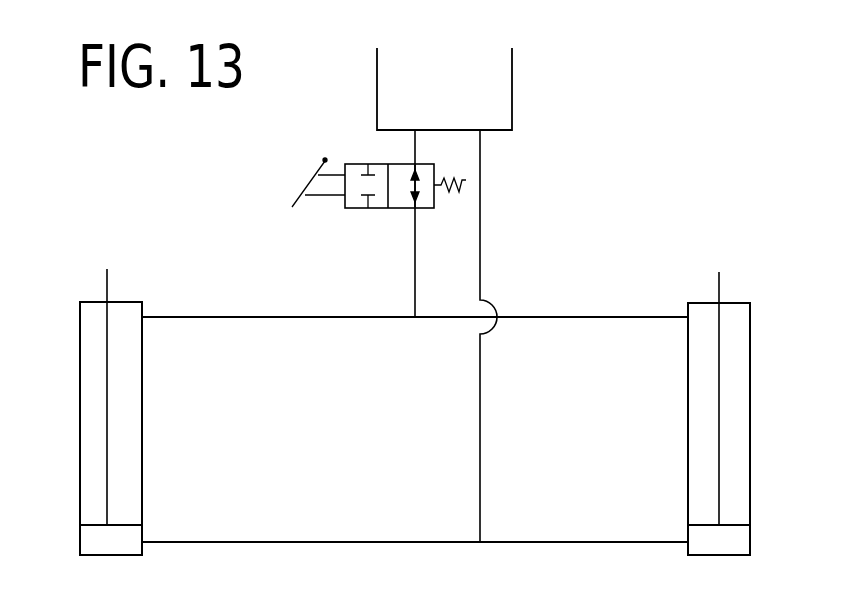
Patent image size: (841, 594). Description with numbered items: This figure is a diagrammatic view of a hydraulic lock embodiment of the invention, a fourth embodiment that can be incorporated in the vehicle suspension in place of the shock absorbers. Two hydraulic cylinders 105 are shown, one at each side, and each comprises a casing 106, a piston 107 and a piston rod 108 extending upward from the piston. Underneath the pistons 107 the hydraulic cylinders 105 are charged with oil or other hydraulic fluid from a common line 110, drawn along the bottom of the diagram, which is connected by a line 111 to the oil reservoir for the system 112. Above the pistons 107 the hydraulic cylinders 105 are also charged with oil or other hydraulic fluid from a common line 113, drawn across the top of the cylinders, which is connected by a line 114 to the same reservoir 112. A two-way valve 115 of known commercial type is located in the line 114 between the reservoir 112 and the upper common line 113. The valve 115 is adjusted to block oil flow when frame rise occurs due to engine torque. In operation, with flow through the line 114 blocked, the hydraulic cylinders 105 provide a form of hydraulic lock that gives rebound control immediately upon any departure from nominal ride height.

The hydraulic cylinder 105 is at (80, 406).
The casing 106 is at (80, 348).
The piston 107 is at (92, 525).
The piston rod 108 is at (107, 442).
The common line 110 is at (272, 544).
The line 111 is at (482, 491).
The oil reservoir 112 is at (512, 72).
The common line 113 is at (290, 318).
The line 114 is at (415, 268).
The two-way valve 115 is at (359, 208).